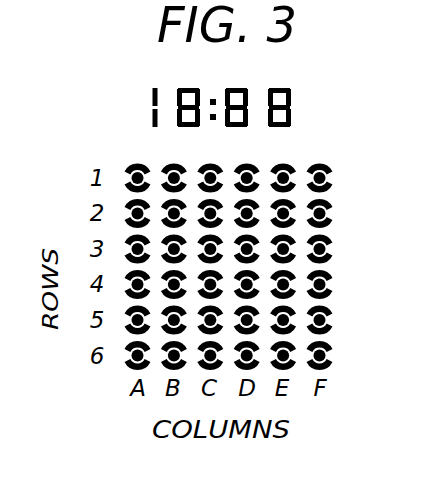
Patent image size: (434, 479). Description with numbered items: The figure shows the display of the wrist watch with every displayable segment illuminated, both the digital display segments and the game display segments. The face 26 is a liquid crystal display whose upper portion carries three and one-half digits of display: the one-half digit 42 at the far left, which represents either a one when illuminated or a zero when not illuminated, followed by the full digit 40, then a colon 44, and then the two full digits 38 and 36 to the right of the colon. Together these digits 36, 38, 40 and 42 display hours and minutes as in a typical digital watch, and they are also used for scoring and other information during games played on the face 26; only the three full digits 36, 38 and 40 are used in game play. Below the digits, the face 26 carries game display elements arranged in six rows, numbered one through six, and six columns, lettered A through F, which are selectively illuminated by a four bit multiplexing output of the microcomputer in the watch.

The face 26 is at (339, 308).
The full digit 36 is at (293, 97).
The full digit 38 is at (262, 73).
The full digit 40 is at (191, 88).
The one-half digit 42 is at (152, 96).
The colon indicator 44 is at (212, 97).